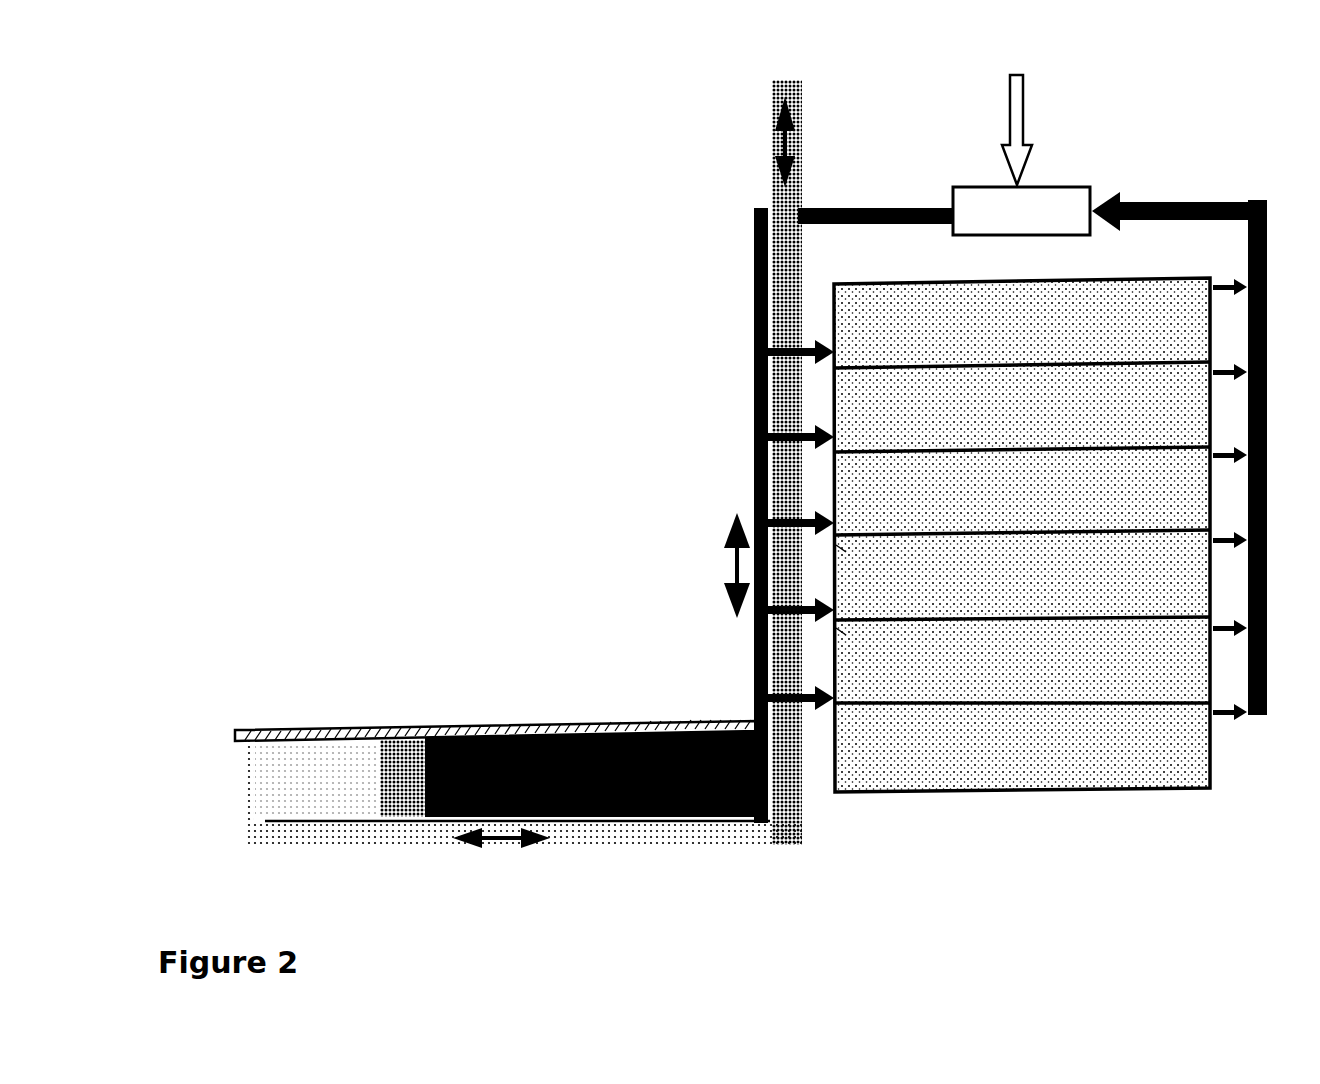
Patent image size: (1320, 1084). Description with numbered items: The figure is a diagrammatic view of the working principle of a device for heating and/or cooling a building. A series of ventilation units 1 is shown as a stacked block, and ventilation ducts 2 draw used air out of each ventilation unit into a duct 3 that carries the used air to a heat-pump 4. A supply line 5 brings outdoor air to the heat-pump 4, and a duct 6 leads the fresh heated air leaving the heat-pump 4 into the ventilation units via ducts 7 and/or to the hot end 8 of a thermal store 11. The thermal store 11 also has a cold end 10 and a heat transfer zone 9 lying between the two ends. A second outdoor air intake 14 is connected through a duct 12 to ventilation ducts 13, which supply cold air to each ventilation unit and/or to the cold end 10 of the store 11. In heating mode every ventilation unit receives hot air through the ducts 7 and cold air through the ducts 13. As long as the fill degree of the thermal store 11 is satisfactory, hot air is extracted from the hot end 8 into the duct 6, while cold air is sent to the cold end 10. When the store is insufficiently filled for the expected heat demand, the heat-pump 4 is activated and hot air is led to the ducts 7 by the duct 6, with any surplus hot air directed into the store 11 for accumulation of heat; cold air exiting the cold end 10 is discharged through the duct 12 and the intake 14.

The ventilation units 1 is at (1022, 535).
The ventilation ducts 2 is at (1225, 280).
The duct 3 is at (1262, 420).
The heat-pump 4 is at (1021, 211).
The supply line 5 is at (1031, 130).
The duct 6 is at (893, 207).
The ducts 7 is at (762, 621).
The hot end 8 is at (620, 790).
The heat transfer zone 9 is at (413, 778).
The cold end 10 is at (290, 780).
The thermal store 11 is at (435, 736).
The duct 12 is at (787, 294).
The ventilation ducts 13 is at (817, 552).
The second outdoor air intake 14 is at (811, 132).